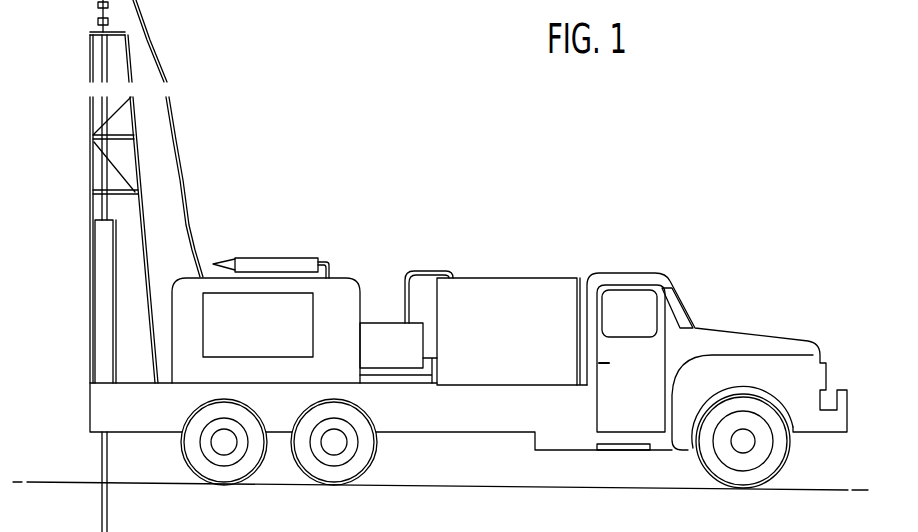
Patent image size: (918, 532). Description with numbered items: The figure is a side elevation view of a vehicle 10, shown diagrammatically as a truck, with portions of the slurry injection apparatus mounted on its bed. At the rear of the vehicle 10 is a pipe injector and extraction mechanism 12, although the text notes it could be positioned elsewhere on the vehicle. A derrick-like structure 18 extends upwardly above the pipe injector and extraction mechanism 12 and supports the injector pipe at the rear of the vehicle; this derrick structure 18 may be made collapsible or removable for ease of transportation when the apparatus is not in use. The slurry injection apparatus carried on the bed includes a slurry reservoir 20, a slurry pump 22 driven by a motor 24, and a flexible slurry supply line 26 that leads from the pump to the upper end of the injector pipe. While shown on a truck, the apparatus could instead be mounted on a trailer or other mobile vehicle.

The vehicle 10 is at (655, 266).
The pipe injector and extraction mechanism 12 is at (101, 313).
The derrick-like structure 18 is at (86, 155).
The slurry reservoir 20 is at (503, 300).
The slurry pump 22 is at (370, 337).
The motor 24 is at (337, 297).
The flexible slurry supply line 26 is at (177, 170).